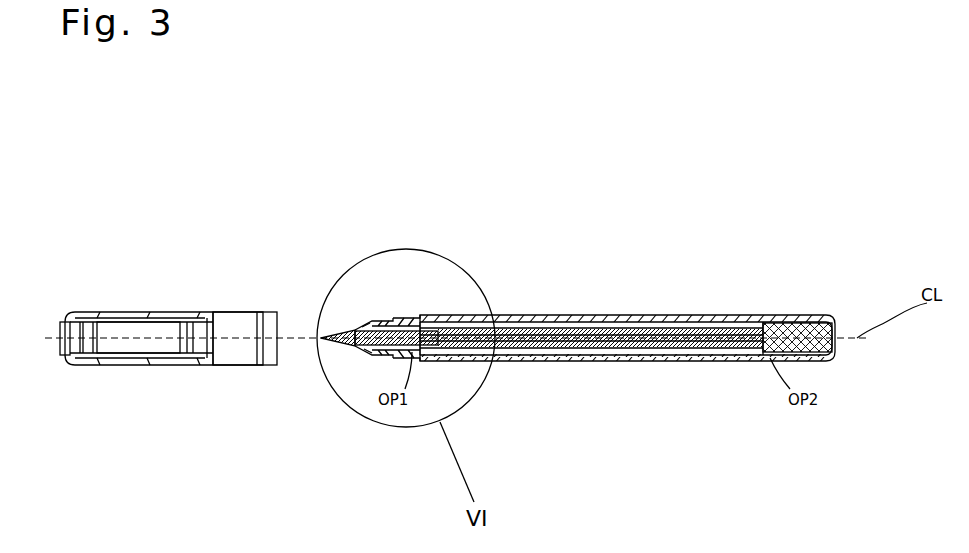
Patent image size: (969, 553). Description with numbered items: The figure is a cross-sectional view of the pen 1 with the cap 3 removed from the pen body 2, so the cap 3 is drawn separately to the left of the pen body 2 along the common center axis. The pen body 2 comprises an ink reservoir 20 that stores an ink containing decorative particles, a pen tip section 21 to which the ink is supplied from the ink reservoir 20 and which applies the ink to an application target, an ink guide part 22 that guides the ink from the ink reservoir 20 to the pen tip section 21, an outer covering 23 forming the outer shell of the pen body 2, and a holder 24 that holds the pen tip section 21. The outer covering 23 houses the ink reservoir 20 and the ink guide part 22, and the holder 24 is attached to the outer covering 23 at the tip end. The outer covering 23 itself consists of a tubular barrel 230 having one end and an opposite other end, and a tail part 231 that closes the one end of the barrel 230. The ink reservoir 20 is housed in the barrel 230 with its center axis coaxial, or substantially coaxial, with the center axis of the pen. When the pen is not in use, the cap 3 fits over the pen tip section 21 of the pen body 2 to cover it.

The writing instrument 1 is at (587, 78).
The pen body 2 is at (718, 115).
The cap 3 is at (144, 310).
The ink reservoir 20 is at (611, 318).
The pen tip section 21 is at (338, 330).
The ink guide part 22 is at (403, 325).
The outer covering 23 is at (743, 150).
The holder 24 is at (355, 330).
The barrel 230 is at (668, 318).
The tail part 231 is at (836, 336).